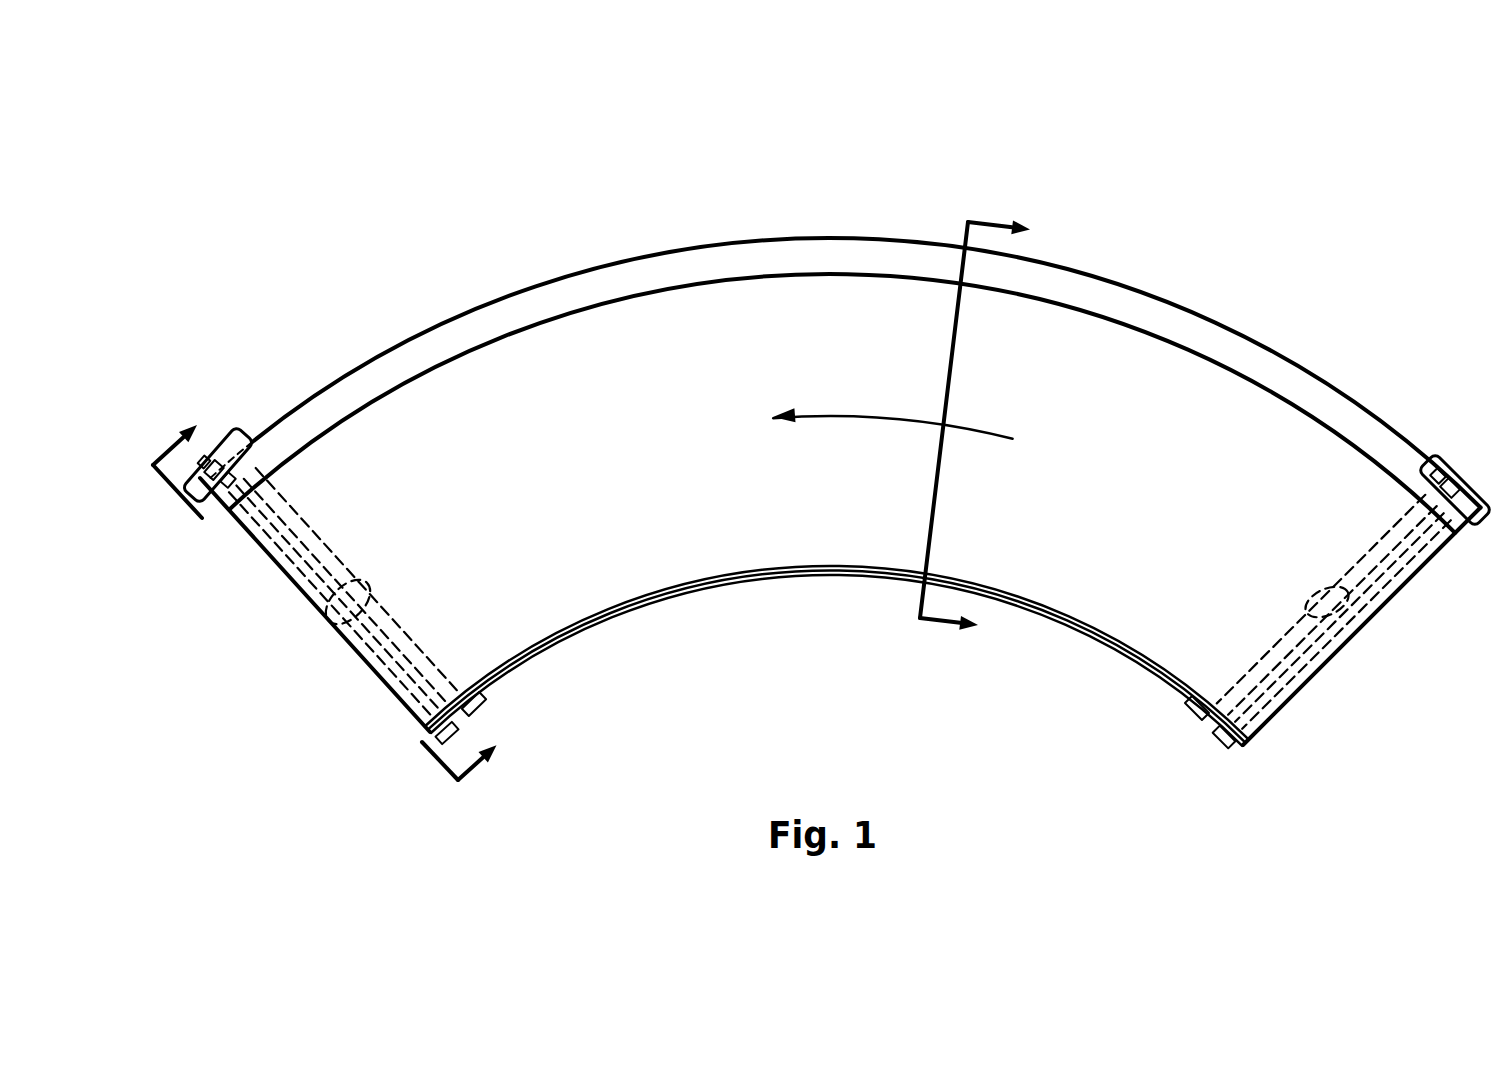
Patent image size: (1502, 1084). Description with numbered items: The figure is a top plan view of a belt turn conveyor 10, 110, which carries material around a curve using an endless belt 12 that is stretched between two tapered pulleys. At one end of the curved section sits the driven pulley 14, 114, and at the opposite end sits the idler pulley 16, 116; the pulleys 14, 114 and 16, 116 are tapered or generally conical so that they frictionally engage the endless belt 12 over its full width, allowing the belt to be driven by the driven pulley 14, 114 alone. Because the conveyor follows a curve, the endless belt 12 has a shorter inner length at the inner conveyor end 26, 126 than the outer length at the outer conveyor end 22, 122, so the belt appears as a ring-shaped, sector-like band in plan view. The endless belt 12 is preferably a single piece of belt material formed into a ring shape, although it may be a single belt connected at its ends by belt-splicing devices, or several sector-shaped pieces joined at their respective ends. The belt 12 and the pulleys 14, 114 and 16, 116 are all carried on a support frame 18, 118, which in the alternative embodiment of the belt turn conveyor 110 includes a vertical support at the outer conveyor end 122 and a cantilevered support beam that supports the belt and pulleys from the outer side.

The belt turn conveyor 10 is at (822, 500).
The belt turn conveyor 110 is at (822, 500).
The endless belt 12 is at (1199, 518).
The driven pulley 14 is at (319, 579).
The driven pulley 114 is at (320, 615).
The idler pulley 16 is at (1354, 599).
The idler pulley 116 is at (1365, 628).
The support frame 18 is at (845, 368).
The support frame 118 is at (557, 272).
The outer conveyor end 22 is at (850, 403).
The outer conveyor end 122 is at (1353, 400).
The inner conveyor end 26 is at (837, 657).
The inner conveyor end 126 is at (1128, 652).